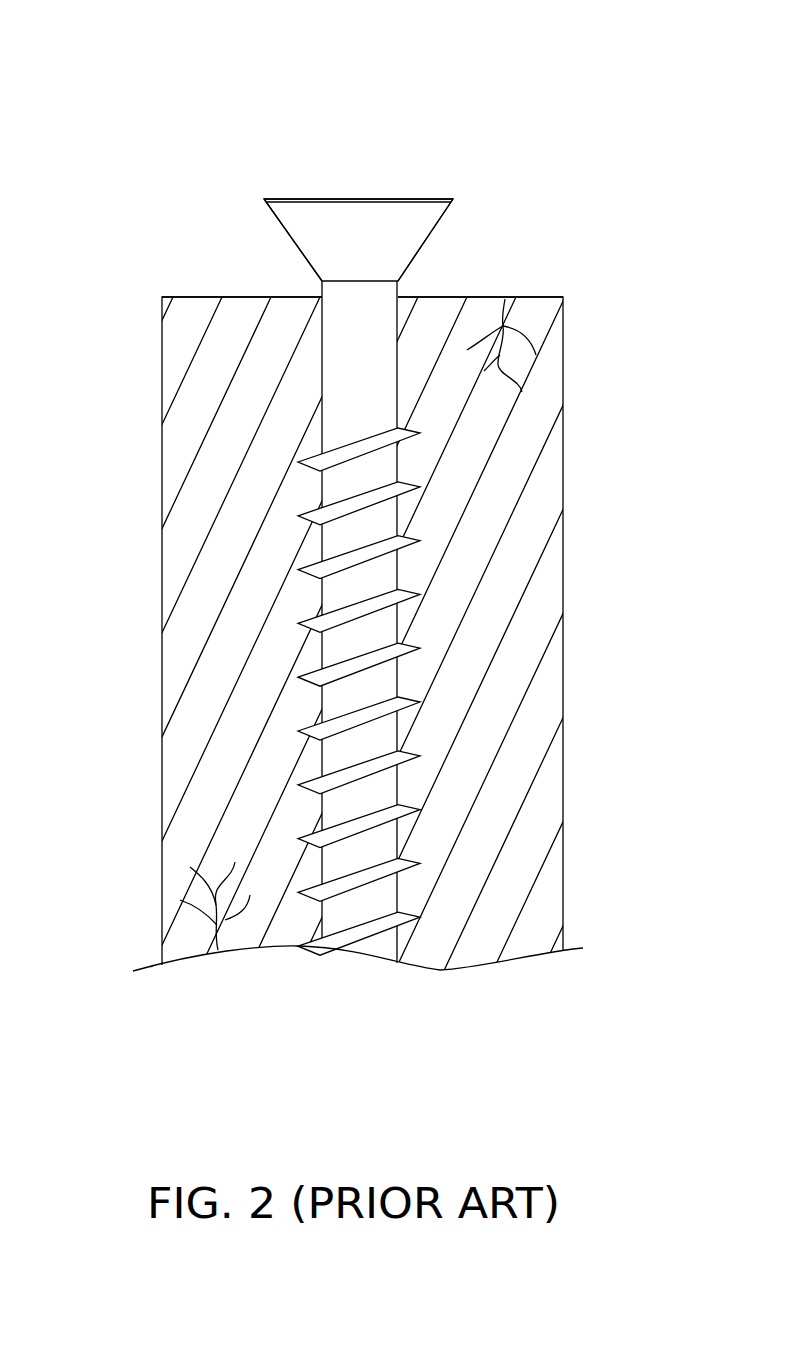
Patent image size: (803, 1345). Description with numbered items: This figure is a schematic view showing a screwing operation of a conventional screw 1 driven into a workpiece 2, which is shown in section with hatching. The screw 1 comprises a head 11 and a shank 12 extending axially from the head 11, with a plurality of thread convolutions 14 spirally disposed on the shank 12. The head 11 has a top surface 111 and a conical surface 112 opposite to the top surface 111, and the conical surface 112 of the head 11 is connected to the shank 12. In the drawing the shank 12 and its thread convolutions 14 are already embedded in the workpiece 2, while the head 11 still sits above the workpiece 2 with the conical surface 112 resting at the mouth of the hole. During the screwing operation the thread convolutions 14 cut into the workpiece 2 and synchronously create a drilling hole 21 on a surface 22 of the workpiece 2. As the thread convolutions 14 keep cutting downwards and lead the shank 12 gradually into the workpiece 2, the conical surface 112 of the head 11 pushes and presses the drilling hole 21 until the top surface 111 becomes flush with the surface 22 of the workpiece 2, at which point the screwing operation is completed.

The screw 1 is at (120, 122).
The head 11 is at (322, 190).
The top surface 111 is at (395, 199).
The conical surface 112 is at (398, 248).
The shank 12 is at (372, 526).
The thread convolutions 14 is at (405, 595).
The workpiece 2 is at (140, 350).
The drilling hole 21 is at (320, 306).
The surface 22 is at (193, 296).